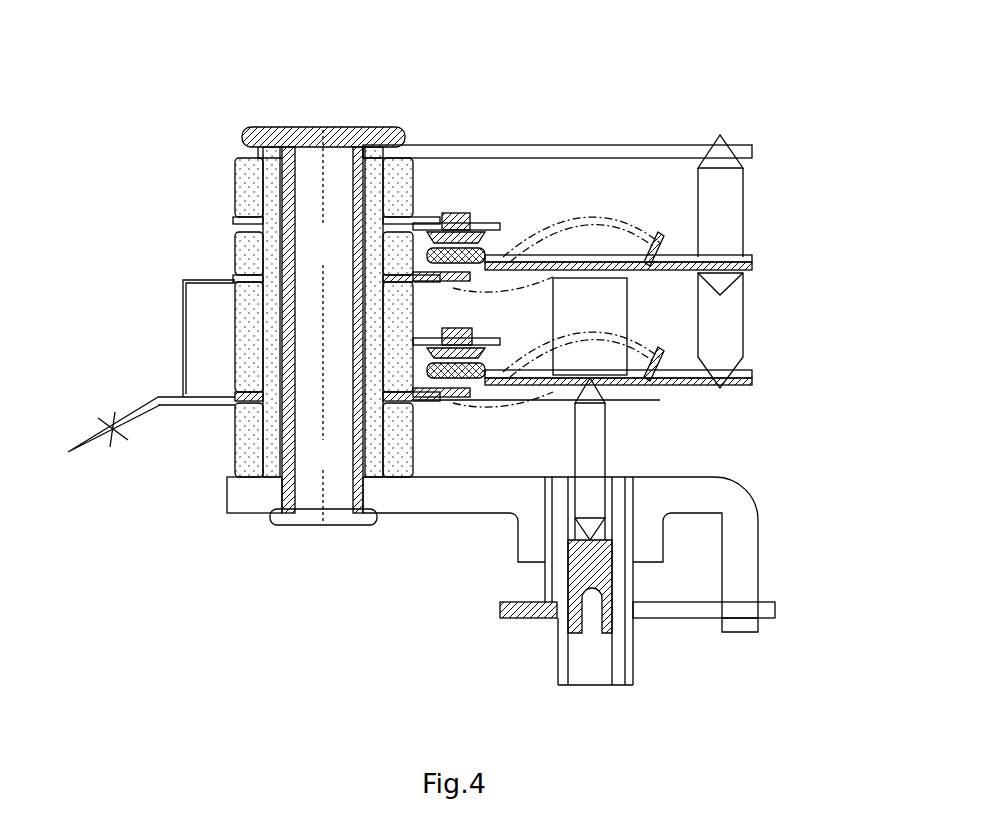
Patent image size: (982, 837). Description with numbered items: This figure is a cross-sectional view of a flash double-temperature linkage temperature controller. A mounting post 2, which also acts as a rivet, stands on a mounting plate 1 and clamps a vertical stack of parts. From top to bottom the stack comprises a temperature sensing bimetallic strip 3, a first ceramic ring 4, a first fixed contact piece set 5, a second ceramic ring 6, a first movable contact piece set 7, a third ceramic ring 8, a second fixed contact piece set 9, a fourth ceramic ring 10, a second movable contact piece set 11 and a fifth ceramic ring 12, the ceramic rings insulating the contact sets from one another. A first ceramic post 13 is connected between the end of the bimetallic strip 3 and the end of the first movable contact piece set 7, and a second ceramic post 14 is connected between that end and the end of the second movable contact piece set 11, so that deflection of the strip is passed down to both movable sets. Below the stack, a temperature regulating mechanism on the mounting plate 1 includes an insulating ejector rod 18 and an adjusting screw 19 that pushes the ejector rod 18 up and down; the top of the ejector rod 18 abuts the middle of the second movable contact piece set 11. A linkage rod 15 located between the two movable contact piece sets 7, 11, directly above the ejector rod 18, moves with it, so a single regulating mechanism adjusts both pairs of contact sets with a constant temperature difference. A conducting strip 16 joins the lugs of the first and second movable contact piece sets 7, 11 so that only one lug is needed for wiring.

The mounting plate 1 is at (445, 480).
The mounting post 2 is at (252, 128).
The temperature sensing bimetallic strip 3 is at (495, 145).
The first ceramic ring 4 is at (250, 187).
The first fixed contact piece set 5 is at (499, 223).
The second ceramic ring 6 is at (250, 253).
The first movable contact piece set 7 is at (640, 262).
The third ceramic ring 8 is at (250, 300).
The second fixed contact piece set 9 is at (503, 343).
The fourth ceramic ring 10 is at (247, 375).
The second movable contact piece set 11 is at (667, 392).
The fifth ceramic ring 12 is at (247, 453).
The first ceramic post 13 is at (720, 210).
The second ceramic post 14 is at (743, 330).
The linkage rod 15 is at (580, 348).
The conducting strip 16 is at (182, 340).
The insulating ejector rod 18 is at (585, 453).
The adjusting screw 19 is at (607, 580).